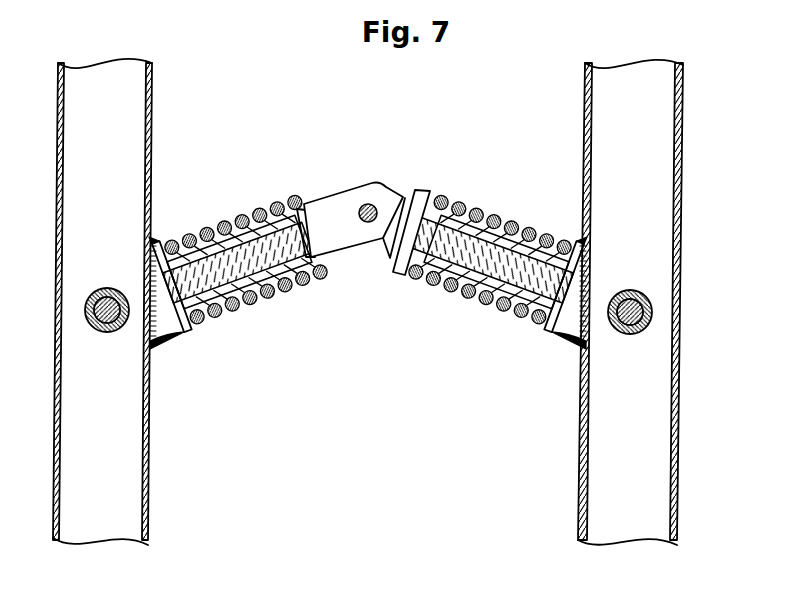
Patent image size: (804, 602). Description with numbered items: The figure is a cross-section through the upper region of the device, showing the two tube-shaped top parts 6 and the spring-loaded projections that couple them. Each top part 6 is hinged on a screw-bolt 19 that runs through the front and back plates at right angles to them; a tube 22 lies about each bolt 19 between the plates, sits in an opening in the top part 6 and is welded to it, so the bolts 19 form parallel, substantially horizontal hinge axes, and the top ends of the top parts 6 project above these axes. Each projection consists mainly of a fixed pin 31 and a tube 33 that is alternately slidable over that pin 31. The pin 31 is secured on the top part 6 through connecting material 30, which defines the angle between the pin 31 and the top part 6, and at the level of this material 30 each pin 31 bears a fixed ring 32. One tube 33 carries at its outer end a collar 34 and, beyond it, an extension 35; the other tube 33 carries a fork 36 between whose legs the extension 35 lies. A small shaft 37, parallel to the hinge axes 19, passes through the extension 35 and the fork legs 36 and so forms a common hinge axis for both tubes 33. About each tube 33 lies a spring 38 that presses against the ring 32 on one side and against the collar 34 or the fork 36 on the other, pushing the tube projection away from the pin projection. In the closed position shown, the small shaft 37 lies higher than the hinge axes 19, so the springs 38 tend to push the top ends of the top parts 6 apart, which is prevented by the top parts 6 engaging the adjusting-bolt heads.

The top part 6 is at (56, 410).
The screw-bolt 19 is at (648, 300).
The tube 22 is at (648, 320).
The material 30 is at (173, 328).
The fixed pin 31 is at (212, 265).
The fixed ring 32 is at (190, 331).
The tube 33 is at (293, 212).
The collar 34 is at (415, 190).
The extension 35 is at (382, 241).
The fork 36 is at (338, 212).
The small shaft 37 is at (370, 206).
The spring 38 is at (257, 311).